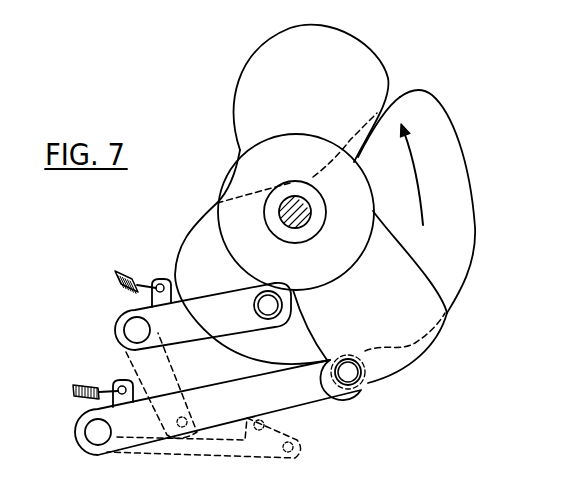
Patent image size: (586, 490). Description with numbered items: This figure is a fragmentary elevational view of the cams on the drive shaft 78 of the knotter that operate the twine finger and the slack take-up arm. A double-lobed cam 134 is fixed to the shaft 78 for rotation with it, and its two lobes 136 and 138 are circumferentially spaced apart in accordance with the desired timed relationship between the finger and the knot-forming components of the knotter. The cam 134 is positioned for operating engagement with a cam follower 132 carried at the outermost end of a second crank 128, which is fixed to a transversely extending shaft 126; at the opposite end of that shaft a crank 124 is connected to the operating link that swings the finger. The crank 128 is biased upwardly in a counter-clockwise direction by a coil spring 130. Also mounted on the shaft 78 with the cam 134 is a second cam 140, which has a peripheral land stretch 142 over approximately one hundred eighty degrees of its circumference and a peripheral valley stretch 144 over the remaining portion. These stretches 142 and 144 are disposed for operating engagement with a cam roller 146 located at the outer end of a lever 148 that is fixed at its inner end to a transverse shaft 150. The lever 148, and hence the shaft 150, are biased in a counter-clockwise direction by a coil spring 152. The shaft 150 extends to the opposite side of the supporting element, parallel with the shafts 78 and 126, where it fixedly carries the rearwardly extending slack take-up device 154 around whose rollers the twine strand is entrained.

The drive shaft 78 is at (293, 197).
The crank 124 is at (123, 355).
The transversely extending shaft 126 is at (125, 325).
The second crank 128 is at (190, 333).
The coil spring 130 is at (140, 273).
The cam follower 132 is at (254, 298).
The double-lobed cam 134 is at (222, 175).
The lobe 136 is at (258, 43).
The lobe 138 is at (446, 314).
The second cam 140 is at (474, 163).
The peripheral land stretch 142 is at (475, 227).
The peripheral valley stretch 144 is at (398, 95).
The cam roller 146 is at (360, 390).
The lever 148 is at (312, 395).
The transverse shaft 150 is at (85, 431).
The coil spring 152 is at (72, 391).
The slack take-up device 154 is at (203, 454).